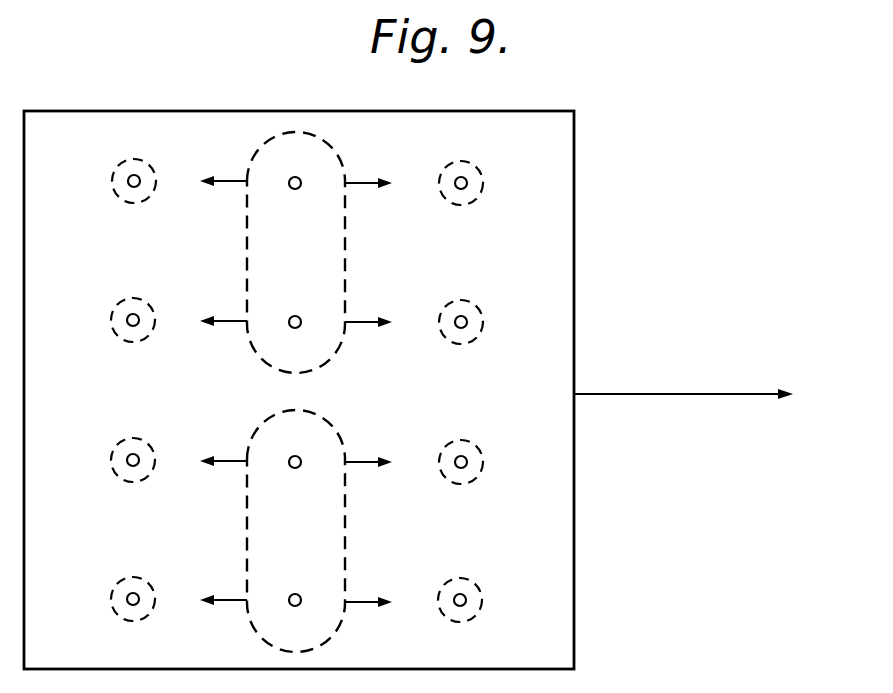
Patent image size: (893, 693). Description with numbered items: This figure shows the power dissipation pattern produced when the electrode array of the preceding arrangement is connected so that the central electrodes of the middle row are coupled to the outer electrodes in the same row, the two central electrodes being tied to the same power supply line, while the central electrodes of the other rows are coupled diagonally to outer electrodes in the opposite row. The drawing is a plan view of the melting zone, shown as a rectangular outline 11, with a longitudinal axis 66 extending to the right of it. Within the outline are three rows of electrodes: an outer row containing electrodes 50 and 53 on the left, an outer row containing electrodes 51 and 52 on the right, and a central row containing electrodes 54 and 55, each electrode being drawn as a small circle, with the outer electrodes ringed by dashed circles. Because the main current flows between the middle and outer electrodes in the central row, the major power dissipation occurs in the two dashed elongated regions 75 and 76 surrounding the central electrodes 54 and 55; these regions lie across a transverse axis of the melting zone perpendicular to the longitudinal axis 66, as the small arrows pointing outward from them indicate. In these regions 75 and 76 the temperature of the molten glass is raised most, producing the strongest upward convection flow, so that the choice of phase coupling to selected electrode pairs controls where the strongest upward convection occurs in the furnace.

The housing 11 is at (577, 184).
The sensor 50 is at (127, 317).
The sensor 51 is at (467, 178).
The sensor 52 is at (467, 318).
The sensor 53 is at (128, 178).
The sensor 54 is at (289, 182).
The sensor 55 is at (289, 321).
The longitudinal axis 66 is at (612, 397).
The region of major power dissipation 75 is at (338, 175).
The region of major power dissipation 76 is at (342, 446).